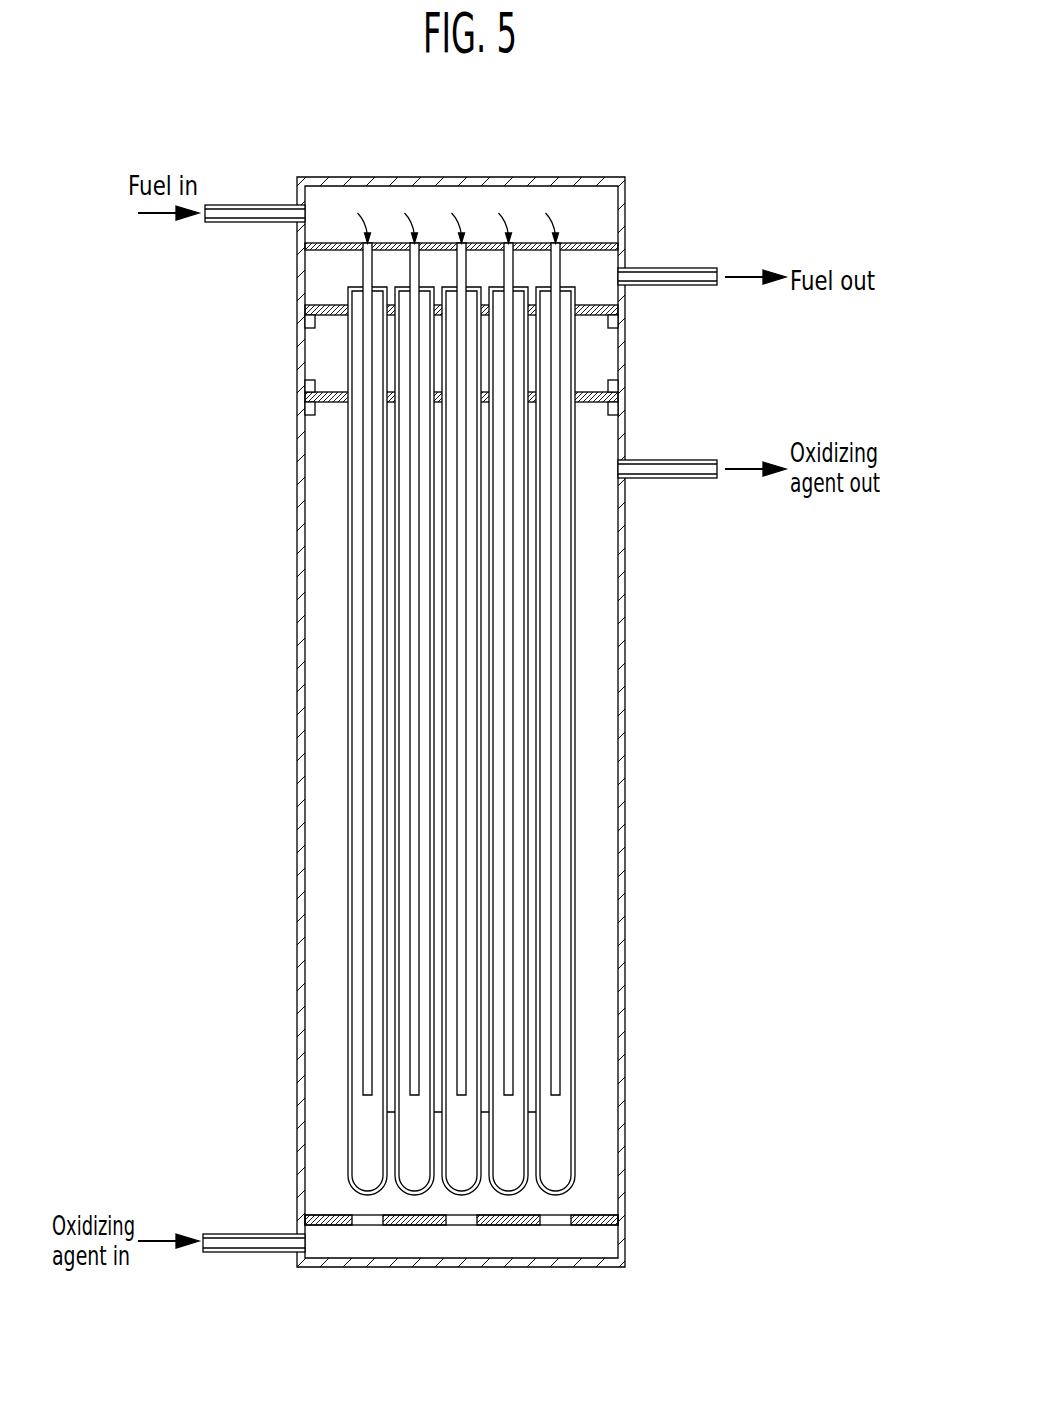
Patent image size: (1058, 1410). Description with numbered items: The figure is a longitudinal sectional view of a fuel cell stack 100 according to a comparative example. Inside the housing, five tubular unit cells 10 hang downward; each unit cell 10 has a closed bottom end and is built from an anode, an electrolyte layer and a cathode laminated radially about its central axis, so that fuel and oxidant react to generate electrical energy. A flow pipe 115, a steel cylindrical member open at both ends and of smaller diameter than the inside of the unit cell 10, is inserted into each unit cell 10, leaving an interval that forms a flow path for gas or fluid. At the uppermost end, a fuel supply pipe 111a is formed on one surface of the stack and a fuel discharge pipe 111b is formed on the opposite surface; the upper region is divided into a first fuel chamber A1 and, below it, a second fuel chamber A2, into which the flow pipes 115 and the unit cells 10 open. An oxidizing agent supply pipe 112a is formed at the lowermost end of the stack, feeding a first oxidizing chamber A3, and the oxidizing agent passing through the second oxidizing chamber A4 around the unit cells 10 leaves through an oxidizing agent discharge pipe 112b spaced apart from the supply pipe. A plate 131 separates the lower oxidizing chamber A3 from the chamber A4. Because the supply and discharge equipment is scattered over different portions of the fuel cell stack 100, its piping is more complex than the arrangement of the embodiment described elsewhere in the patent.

The fuel cell stack 100 is at (733, 100).
The unit cell 10 is at (577, 732).
The flow pipe 115 is at (362, 270).
The fuel supply pipe 111a is at (257, 210).
The fuel discharge pipe 111b is at (710, 272).
The oxidizing agent supply pipe 112a is at (257, 1240).
The oxidizing agent discharge pipe 112b is at (710, 466).
The support plate 131 is at (592, 1213).
The first fuel chamber A1 is at (585, 212).
The second fuel chamber A2 is at (328, 270).
The first oxidizing chamber A3 is at (462, 1245).
The second oxidizing chamber A4 is at (597, 938).